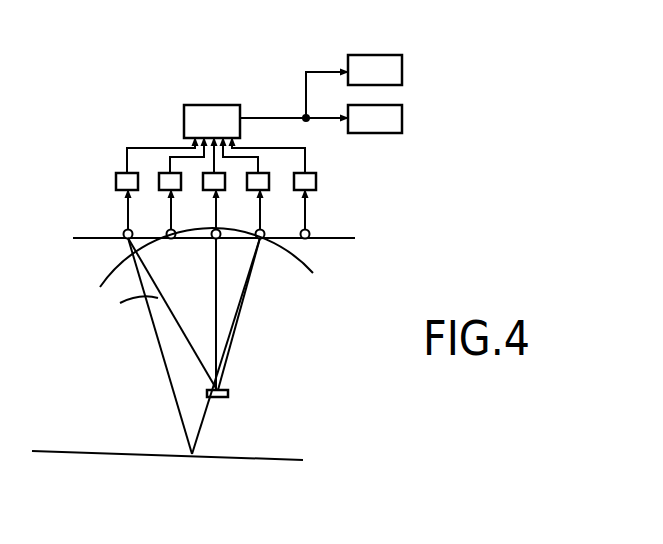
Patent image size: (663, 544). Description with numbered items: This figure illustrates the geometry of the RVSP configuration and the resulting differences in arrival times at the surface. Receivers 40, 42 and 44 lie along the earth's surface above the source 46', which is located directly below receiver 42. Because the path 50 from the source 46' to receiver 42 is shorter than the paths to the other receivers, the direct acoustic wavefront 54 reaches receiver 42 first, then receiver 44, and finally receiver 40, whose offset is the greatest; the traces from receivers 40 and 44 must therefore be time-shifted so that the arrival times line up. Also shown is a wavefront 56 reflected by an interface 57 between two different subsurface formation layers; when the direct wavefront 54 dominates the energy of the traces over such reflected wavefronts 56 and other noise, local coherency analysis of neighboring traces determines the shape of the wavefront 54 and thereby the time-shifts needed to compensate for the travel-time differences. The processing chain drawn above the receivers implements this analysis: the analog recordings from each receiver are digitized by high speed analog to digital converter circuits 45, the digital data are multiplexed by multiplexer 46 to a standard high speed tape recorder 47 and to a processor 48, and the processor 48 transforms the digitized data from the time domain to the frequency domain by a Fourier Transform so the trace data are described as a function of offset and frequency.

The receiver 40 is at (123, 233).
The receiver 42 is at (220, 232).
The receiver 44 is at (264, 232).
The analog to digital converter circuits 45 is at (116, 185).
The multiplexer 46 is at (181, 121).
The source 46' is at (243, 405).
The tape recorder 47 is at (402, 66).
The processor 48 is at (402, 112).
The path 50 is at (214, 272).
The direct acoustic wavefront 54 is at (314, 272).
The reflected wavefront 56 is at (117, 310).
The interface 57 is at (301, 457).